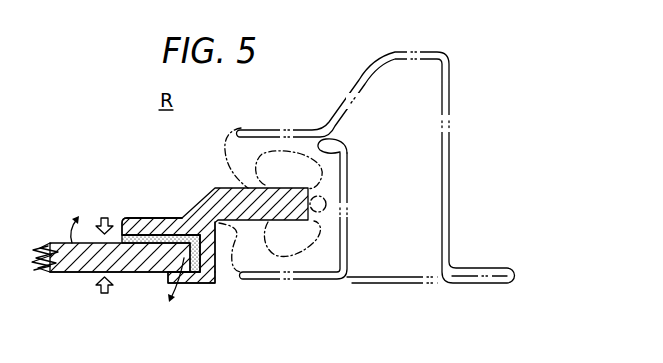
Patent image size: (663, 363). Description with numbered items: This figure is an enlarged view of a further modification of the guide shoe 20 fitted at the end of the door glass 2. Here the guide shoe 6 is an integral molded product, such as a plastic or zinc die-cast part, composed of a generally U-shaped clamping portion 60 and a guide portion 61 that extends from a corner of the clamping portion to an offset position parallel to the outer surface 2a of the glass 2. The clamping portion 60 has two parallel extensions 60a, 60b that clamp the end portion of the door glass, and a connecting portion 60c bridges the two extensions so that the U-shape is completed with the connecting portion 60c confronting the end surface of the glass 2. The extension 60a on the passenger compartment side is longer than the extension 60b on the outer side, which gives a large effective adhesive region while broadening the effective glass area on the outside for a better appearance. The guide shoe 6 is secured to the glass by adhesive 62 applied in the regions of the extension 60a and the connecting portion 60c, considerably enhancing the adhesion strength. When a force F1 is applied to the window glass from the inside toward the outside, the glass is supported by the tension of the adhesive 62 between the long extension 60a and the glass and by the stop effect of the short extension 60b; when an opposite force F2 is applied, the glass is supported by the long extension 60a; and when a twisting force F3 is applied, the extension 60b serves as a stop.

The door glass 2 is at (78, 265).
The outer surface of the glass 2a is at (133, 272).
The guide shoe 20 is at (47, 272).
The guide shoe 6 is at (208, 190).
The clamping portion 60 is at (157, 212).
The extension 60a is at (187, 232).
The extension 60b is at (197, 284).
The connecting portion 60c is at (208, 253).
The guide portion 61 is at (286, 197).
The adhesive 62 is at (133, 237).
The force F1 is at (103, 214).
The opposite force F2 is at (100, 299).
The twisting force F3 is at (117, 263).